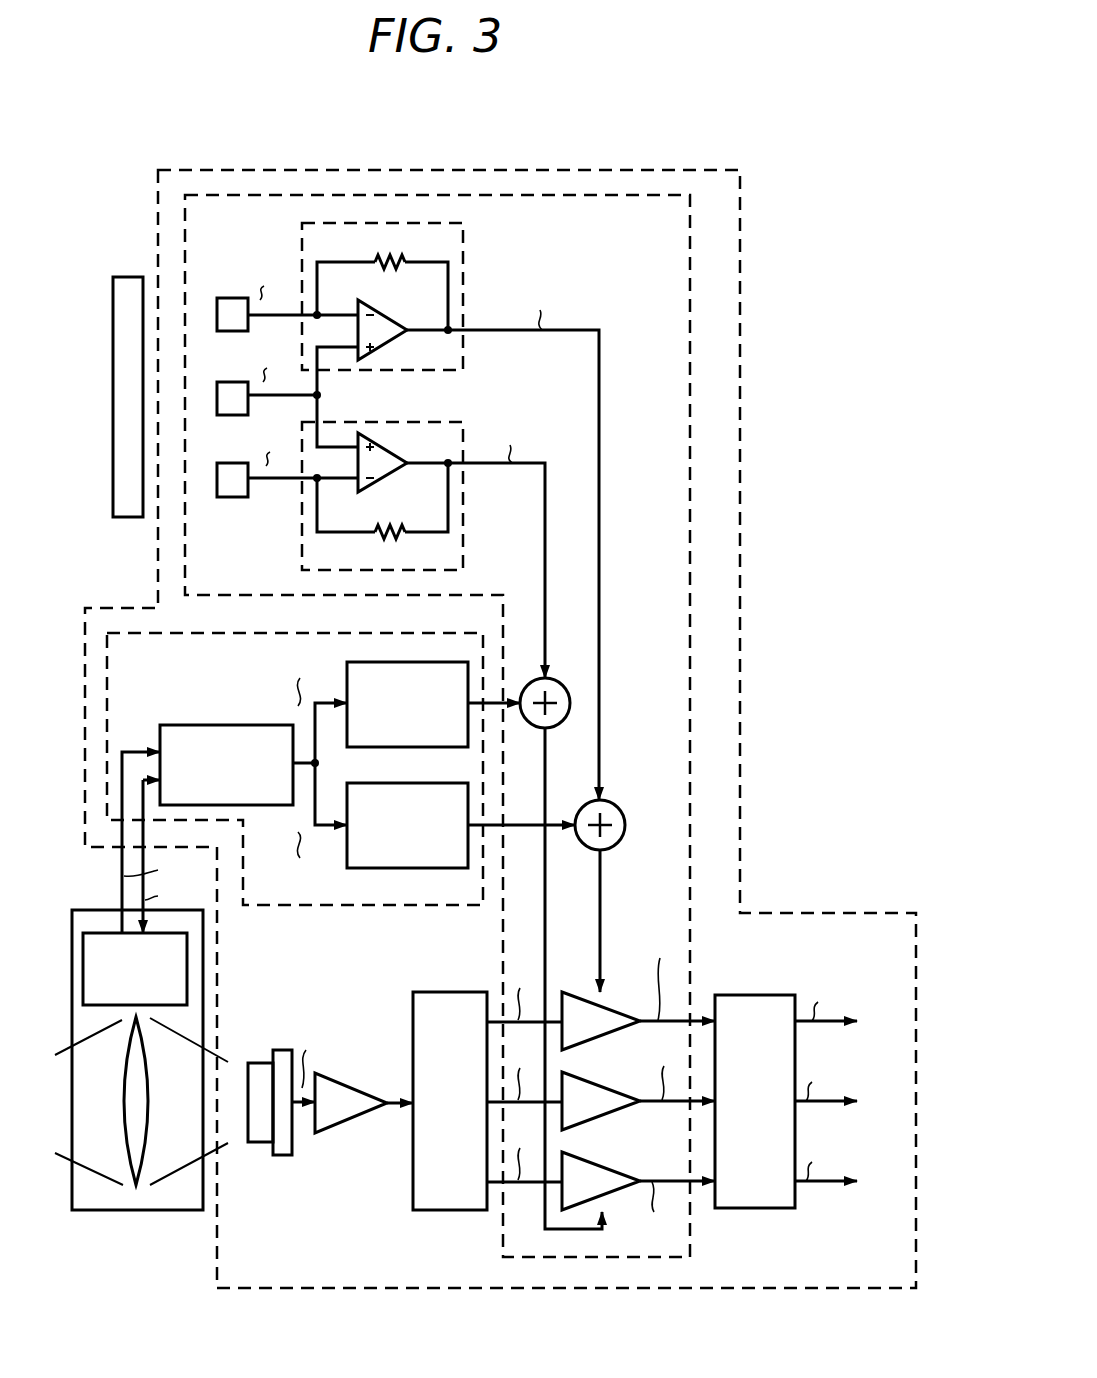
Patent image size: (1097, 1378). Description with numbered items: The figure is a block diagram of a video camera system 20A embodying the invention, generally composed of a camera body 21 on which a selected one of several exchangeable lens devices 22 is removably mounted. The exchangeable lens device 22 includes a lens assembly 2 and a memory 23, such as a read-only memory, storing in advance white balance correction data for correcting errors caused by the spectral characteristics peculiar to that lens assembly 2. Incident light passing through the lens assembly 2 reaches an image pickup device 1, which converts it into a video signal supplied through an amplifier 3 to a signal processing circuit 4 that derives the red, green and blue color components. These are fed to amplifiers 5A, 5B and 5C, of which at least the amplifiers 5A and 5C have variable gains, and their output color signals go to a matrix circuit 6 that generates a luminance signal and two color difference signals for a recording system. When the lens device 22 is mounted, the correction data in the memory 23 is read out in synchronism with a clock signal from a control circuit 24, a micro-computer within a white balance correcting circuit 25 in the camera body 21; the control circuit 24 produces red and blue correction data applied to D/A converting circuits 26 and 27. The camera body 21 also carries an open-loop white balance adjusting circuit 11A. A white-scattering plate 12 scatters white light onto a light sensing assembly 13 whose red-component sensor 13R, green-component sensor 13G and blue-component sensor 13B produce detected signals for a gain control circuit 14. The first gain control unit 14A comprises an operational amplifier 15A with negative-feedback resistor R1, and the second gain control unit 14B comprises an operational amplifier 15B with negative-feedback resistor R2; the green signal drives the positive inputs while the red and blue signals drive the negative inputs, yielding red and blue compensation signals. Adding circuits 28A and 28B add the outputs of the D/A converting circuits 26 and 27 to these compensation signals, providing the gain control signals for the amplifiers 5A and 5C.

The image pickup device 1 is at (276, 1050).
The lens assembly 2 is at (110, 1090).
The amplifier 3 is at (358, 1077).
The signal processing circuit 4 is at (451, 992).
The amplifier 5A is at (616, 1010).
The amplifier 5B is at (596, 1074).
The amplifier 5C is at (596, 1156).
The matrix circuit 6 is at (758, 995).
The white balance adjusting circuit 11A is at (690, 712).
The white-scattering plate 12 is at (127, 277).
The light sensing assembly 13 is at (222, 295).
The red-component sensor 13R is at (217, 332).
The green-component sensor 13G is at (217, 416).
The blue-component sensor 13B is at (217, 498).
The gain control circuit 14 is at (438, 397).
The first gain control unit 14A is at (463, 268).
The second gain control unit 14B is at (463, 520).
The operational amplifier 15A is at (399, 338).
The operational amplifier 15B is at (398, 450).
The resistor R1 is at (376, 256).
The resistor R2 is at (398, 538).
The video camera system 20A is at (125, 1253).
The camera body 21 is at (740, 280).
The exchangeable lens device 22 is at (150, 1212).
The memory 23 is at (102, 933).
The control circuit 24 is at (240, 725).
The white balance correcting circuit 25 is at (320, 910).
The D/A converting circuit 26 is at (406, 868).
The D/A converting circuit 27 is at (406, 747).
The adding circuit 28A is at (622, 814).
The adding circuit 28B is at (564, 682).